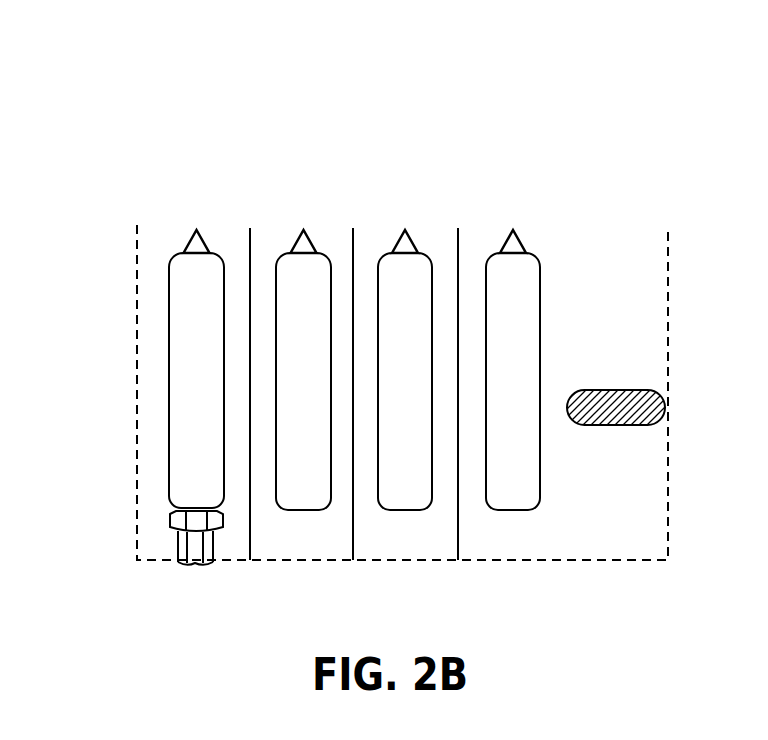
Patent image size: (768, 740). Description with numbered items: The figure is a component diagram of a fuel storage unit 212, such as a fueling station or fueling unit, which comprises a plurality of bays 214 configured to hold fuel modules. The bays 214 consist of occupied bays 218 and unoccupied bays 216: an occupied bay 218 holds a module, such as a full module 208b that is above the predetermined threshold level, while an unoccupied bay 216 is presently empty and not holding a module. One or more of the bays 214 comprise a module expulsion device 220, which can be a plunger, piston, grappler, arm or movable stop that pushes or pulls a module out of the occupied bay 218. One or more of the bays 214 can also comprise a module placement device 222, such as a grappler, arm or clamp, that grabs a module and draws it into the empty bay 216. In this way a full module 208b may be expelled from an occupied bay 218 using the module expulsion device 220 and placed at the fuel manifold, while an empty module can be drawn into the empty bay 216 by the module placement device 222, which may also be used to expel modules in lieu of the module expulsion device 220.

The fuel storage unit 212 is at (198, 113).
The occupied bay 218 is at (322, 187).
The unoccupied bay 216 is at (602, 240).
The full module 208b is at (293, 270).
The module expulsion device 220 is at (183, 545).
The module placement device 222 is at (632, 424).
The bays 214 is at (232, 633).